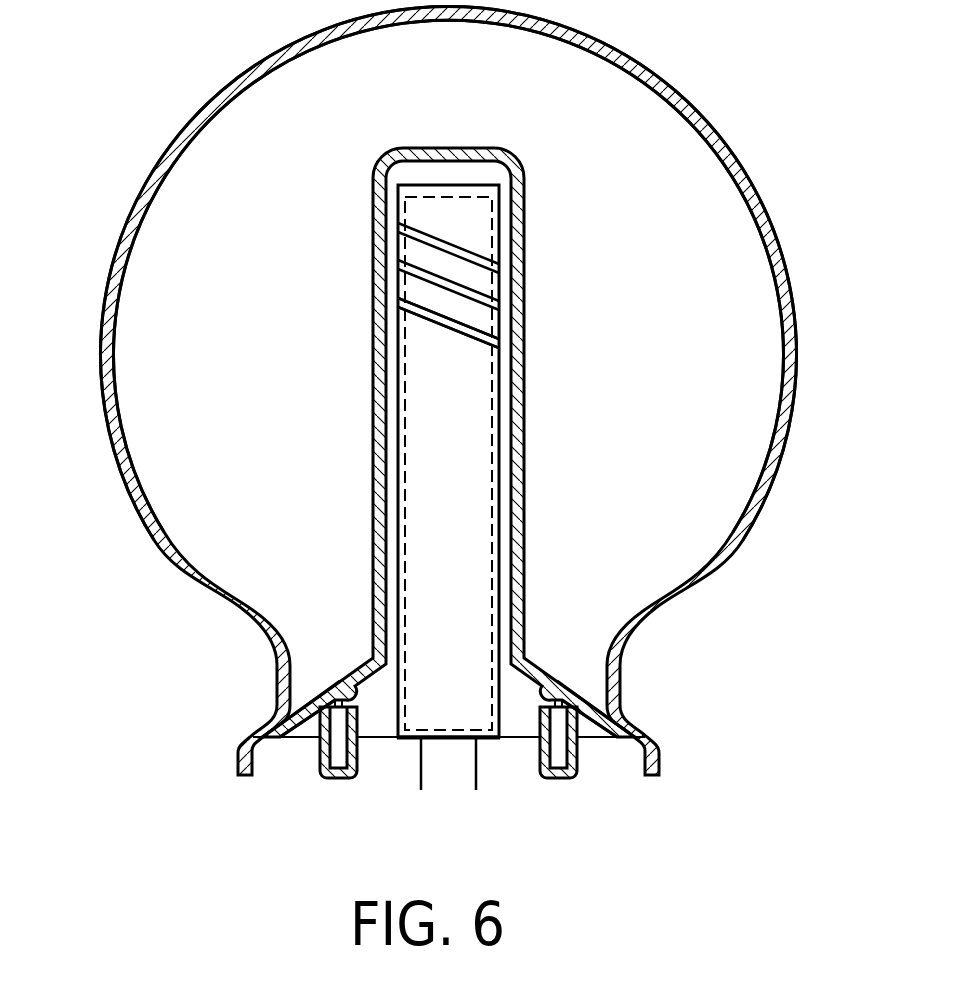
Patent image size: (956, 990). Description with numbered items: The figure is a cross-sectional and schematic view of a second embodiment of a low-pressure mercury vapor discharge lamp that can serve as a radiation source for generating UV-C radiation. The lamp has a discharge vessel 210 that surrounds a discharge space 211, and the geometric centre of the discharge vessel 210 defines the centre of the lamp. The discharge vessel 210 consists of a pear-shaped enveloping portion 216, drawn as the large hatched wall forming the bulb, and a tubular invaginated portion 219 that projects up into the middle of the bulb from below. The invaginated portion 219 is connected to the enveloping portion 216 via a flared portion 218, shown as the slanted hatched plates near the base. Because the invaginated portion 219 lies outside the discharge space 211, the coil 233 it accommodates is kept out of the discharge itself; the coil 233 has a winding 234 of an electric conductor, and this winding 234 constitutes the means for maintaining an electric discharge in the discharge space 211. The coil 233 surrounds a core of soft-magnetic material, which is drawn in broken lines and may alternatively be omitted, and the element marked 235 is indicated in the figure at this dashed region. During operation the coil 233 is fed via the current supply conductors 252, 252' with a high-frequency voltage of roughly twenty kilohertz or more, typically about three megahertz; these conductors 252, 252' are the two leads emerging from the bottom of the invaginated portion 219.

The discharge vessel 210 is at (184, 122).
The discharge space 211 is at (147, 266).
The enveloping portion 216 is at (707, 122).
The flared portion 218 is at (312, 697).
The invaginated portion 219 is at (516, 203).
The coil 233 is at (427, 323).
The winding 234 is at (477, 343).
The carrier module 235 is at (500, 449).
The current supply conductor 252 is at (399, 789).
The current supply conductor 252' is at (498, 789).